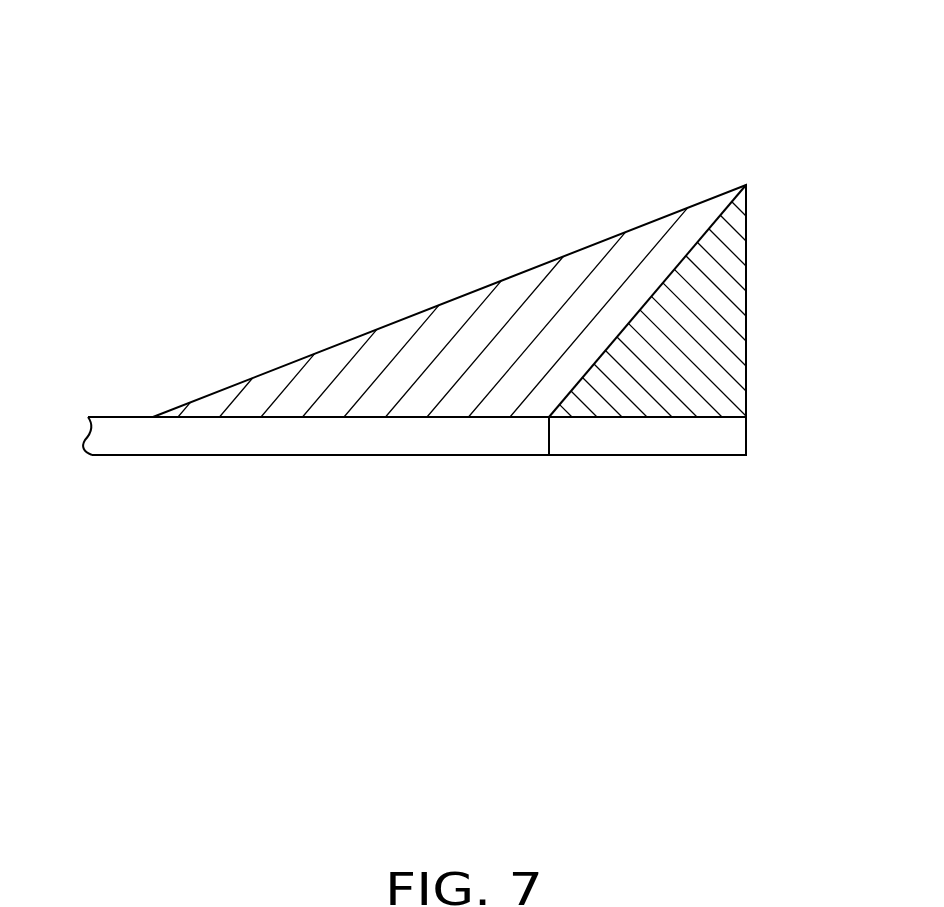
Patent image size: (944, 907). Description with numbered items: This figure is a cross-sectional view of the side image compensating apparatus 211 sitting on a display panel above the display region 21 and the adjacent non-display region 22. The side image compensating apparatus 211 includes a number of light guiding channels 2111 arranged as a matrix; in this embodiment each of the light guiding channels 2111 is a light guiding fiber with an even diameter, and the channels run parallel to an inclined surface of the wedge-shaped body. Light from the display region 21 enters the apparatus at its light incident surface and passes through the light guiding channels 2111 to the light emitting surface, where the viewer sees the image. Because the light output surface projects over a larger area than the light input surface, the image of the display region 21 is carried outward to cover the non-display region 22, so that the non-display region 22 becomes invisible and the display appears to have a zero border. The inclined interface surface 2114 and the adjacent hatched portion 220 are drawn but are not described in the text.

The display region 21 is at (722, 437).
The non-display region 22 is at (130, 440).
The side image compensating apparatus 211 is at (498, 115).
The light guiding channels 2111 is at (330, 365).
The inclined interface surface 2114 is at (708, 237).
The second filled portion 220 is at (703, 337).